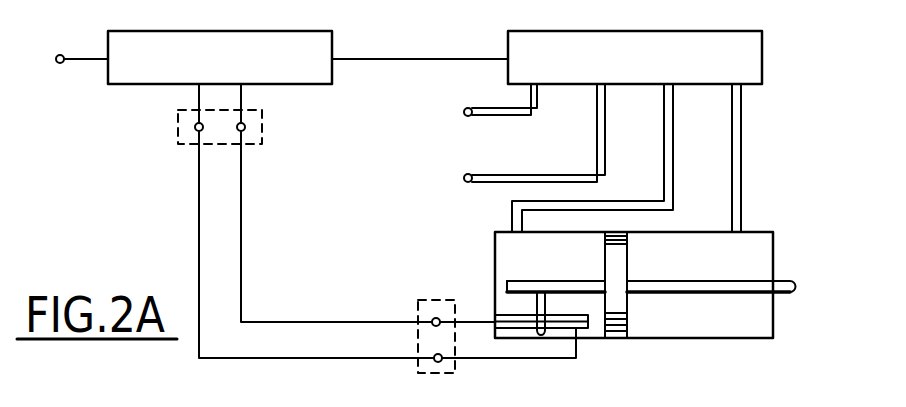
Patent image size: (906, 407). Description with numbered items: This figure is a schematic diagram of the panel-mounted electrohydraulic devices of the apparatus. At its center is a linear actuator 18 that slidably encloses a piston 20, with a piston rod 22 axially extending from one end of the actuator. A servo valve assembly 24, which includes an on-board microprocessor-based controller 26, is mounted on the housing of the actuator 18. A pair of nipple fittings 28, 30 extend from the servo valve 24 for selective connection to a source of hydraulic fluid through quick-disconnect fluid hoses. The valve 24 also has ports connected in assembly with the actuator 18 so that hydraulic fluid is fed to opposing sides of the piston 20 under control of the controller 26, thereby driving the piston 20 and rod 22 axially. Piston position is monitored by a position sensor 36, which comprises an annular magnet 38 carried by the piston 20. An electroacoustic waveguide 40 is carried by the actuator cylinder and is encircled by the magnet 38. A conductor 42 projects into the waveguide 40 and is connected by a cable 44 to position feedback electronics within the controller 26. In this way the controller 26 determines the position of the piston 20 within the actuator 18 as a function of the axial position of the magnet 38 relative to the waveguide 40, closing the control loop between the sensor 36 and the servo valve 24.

The linear actuator 18 is at (704, 340).
The piston 20 is at (628, 250).
The piston rod 22 is at (778, 282).
The servo valve assembly 24 is at (663, 30).
The controller 26 is at (290, 30).
The nipple fitting 28 is at (478, 106).
The nipple fitting 30 is at (485, 170).
The position sensor 36 is at (555, 371).
The annular magnet 38 is at (540, 332).
The electroacoustic waveguide 40 is at (497, 315).
The conductor 42 is at (522, 322).
The cable 44 is at (242, 242).